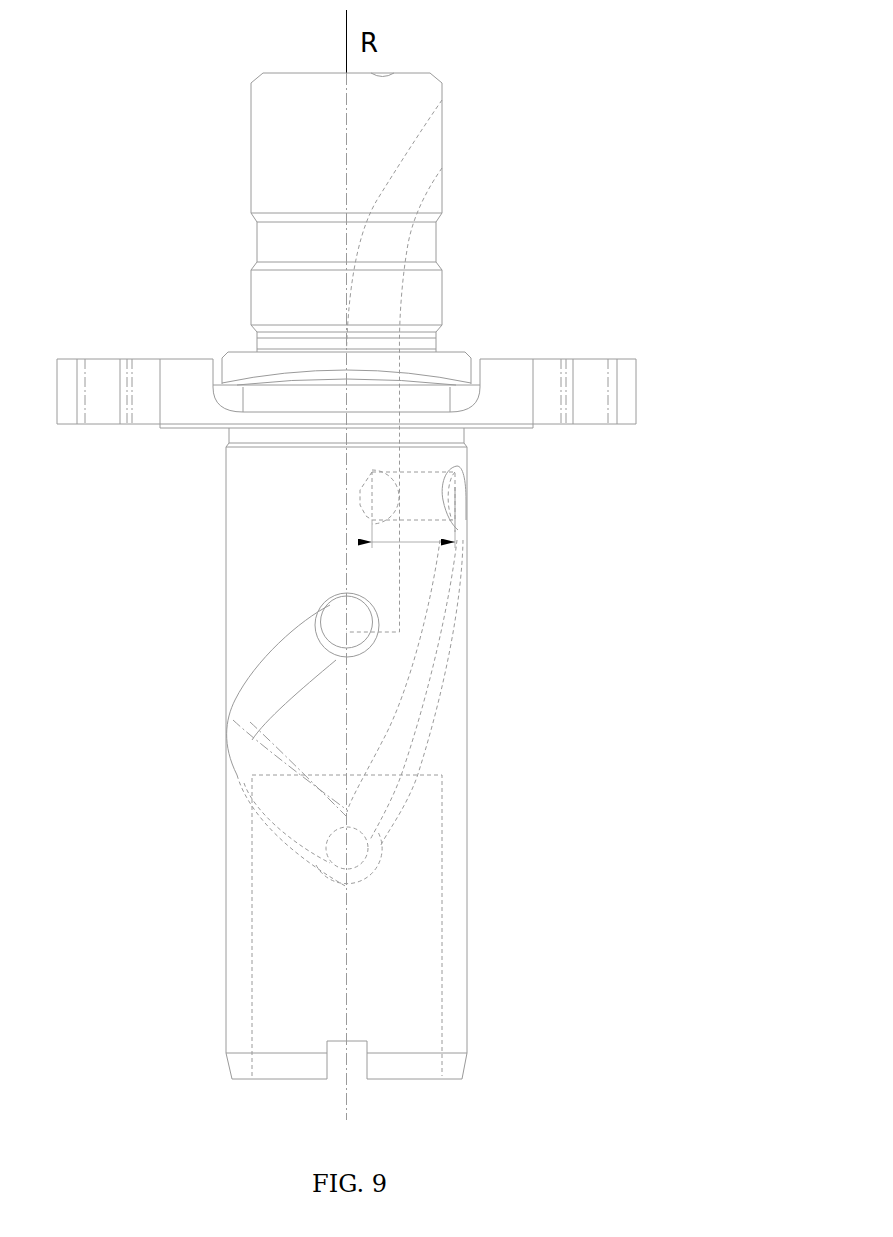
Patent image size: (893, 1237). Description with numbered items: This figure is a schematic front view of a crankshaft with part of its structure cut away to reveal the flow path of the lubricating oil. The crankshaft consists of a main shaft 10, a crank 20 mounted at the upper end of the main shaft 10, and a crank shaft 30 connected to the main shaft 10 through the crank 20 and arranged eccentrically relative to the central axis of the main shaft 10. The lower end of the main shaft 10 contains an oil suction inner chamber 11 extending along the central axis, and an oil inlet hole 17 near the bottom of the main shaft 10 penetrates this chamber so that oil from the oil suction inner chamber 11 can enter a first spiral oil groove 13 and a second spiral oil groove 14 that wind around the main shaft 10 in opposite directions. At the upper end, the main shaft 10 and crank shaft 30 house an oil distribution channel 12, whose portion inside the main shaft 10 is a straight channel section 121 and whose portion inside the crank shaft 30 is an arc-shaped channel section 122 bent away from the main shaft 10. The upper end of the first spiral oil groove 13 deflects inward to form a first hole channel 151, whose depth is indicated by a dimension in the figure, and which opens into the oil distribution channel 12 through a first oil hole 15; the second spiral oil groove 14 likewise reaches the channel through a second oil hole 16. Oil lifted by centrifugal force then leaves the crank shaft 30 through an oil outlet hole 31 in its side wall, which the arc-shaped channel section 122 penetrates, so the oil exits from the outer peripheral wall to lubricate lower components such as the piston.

The main shaft 10 is at (462, 840).
The oil suction inner chamber 11 is at (418, 940).
The oil distribution channel 12 is at (402, 325).
The straight channel section 121 is at (378, 440).
The arc-shaped channel section 122 is at (398, 204).
The first spiral oil groove 13 is at (422, 710).
The second spiral oil groove 14 is at (246, 763).
The first oil hole 15 is at (385, 513).
The first hole channel 151 is at (420, 512).
The second oil hole 16 is at (330, 606).
The oil inlet hole 17 is at (333, 848).
The crank 20 is at (96, 385).
The crank shaft 30 is at (287, 157).
The oil outlet hole 31 is at (442, 133).